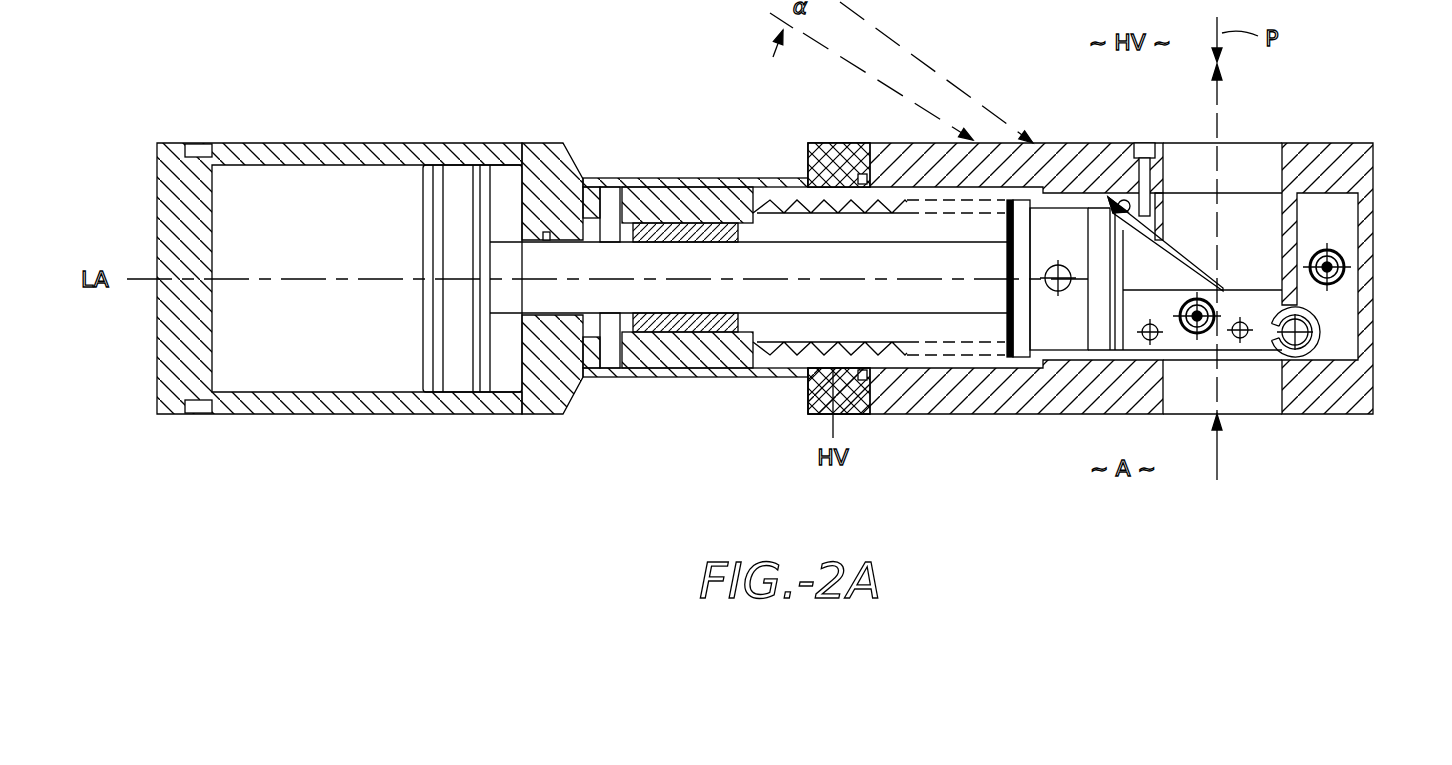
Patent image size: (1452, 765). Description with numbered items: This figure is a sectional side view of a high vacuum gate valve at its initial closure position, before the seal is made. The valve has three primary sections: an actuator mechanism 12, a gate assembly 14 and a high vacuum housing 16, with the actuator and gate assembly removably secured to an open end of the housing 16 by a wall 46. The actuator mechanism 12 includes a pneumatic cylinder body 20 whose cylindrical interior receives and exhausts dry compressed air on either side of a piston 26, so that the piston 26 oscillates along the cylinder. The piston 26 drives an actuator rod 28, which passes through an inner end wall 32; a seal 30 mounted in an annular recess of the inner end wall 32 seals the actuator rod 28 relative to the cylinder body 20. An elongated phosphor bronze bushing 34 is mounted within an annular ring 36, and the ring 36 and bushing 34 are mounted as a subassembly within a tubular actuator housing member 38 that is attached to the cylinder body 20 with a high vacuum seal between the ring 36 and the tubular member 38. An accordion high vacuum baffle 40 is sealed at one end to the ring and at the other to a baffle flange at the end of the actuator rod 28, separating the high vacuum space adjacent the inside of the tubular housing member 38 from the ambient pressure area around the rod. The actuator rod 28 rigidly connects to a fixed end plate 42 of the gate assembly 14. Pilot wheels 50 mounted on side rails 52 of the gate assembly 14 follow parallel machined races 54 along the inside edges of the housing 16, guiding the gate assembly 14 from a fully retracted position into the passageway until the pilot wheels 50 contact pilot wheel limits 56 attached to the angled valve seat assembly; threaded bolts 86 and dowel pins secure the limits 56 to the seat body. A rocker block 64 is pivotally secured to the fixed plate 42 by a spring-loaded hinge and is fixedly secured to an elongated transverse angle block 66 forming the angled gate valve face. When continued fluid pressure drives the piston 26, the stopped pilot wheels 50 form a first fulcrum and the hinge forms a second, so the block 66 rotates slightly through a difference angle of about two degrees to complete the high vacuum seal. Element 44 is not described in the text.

The actuator mechanism 12 is at (238, 458).
The gate assembly 14 is at (1070, 322).
The high vacuum housing 16 is at (1040, 143).
The pneumatic cylinder body 20 is at (355, 402).
The piston 26 is at (428, 218).
The actuator rod 28 is at (546, 275).
The seal 30 is at (545, 236).
The inner end wall 32 is at (550, 368).
The phosphor bronze bushing 34 is at (703, 234).
The annular ring 36 is at (707, 212).
The tubular actuator housing member 38 is at (760, 178).
The accordion high vacuum baffle 40 is at (867, 147).
The fixed end plate 42 is at (1020, 298).
The slide block 44 is at (1060, 243).
The wall 46 is at (842, 147).
The pilot wheels 50 is at (1322, 312).
The side rails 52 is at (1248, 305).
The machined races 54 is at (1157, 352).
The pilot wheel limits 56 is at (1322, 348).
The rocker block 64 is at (1102, 243).
The elongated transverse angle block 66 is at (1160, 278).
The threaded bolts 86 is at (1345, 262).